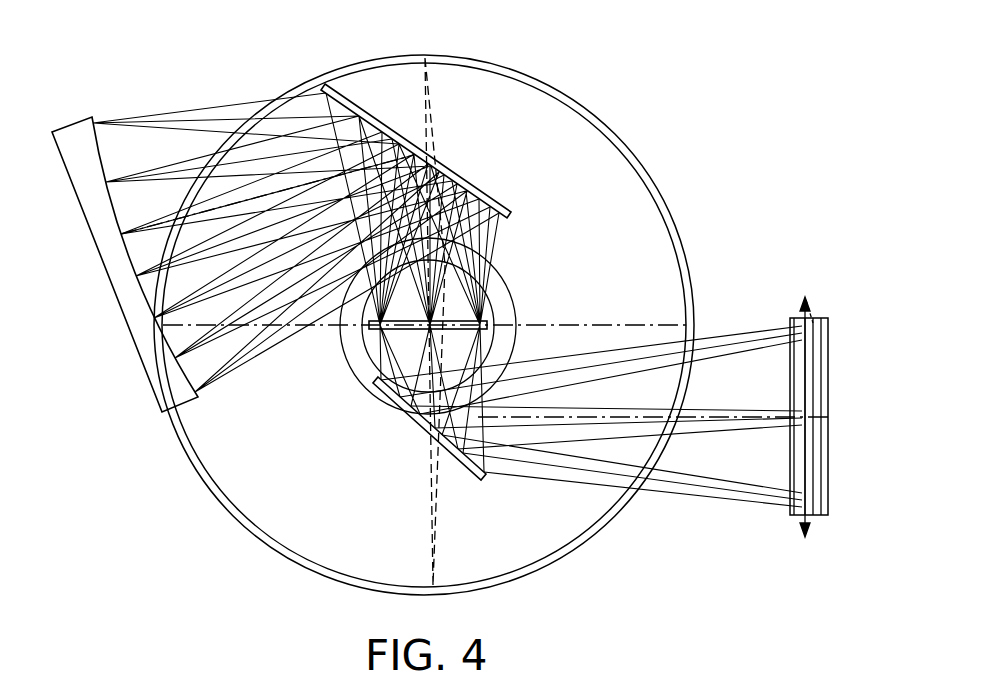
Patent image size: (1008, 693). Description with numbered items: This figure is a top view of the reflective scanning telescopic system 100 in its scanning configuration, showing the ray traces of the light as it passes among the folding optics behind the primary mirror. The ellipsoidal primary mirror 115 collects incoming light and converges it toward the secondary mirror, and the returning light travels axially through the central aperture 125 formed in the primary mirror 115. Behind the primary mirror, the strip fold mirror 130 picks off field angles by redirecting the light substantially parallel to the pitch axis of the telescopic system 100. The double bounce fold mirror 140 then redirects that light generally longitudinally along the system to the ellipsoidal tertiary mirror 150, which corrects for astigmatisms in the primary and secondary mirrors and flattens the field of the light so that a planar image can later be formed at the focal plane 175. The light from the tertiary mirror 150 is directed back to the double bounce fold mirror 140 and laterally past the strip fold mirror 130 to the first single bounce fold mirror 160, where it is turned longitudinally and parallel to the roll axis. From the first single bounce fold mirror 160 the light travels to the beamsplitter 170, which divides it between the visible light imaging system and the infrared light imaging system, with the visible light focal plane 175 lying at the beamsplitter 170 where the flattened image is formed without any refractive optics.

The reflective scanning telescopic system 100 is at (180, 67).
The ellipsoidal primary mirror 115 is at (668, 203).
The central aperture 125 is at (362, 348).
The strip fold mirror 130 is at (482, 312).
The double bounce fold mirror 140 is at (352, 96).
The ellipsoidal tertiary mirror 150 is at (150, 390).
The first single bounce fold mirror 160 is at (413, 423).
The beamsplitter 170 is at (828, 512).
The visible light focal plane 175 is at (806, 296).